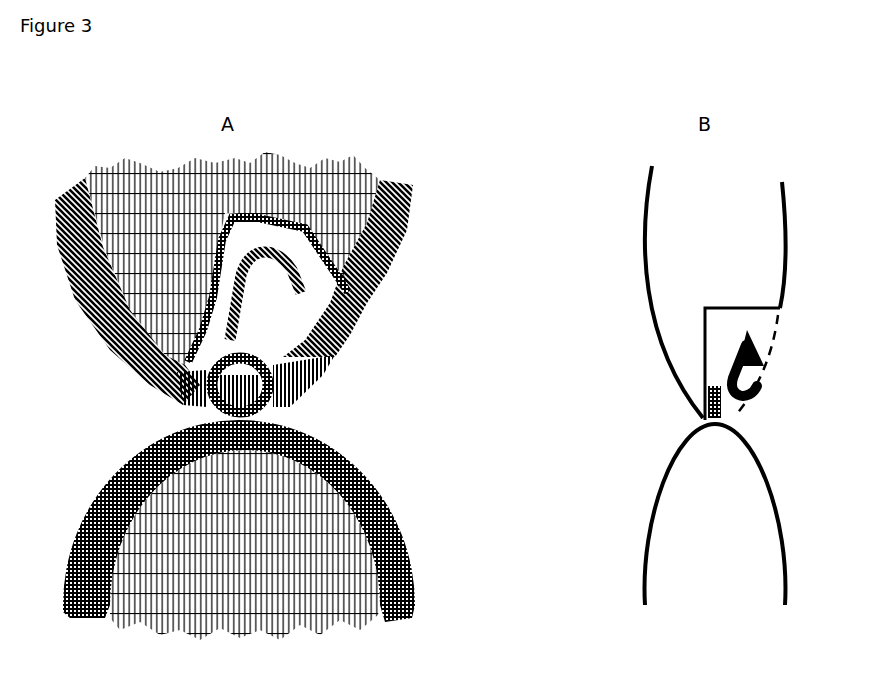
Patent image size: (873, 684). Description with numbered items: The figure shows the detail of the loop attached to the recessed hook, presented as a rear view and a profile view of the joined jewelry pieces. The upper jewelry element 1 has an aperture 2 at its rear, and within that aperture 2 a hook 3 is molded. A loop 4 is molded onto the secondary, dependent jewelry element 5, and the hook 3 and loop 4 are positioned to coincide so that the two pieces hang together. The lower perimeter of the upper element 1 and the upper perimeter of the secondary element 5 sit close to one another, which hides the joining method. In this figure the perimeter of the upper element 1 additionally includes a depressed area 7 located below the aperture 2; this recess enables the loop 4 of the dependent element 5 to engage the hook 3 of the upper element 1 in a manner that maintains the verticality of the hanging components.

The jewelry element 1 is at (407, 233).
The aperture 2 is at (330, 303).
The hook 3 is at (253, 310).
The loop 4 is at (273, 407).
The secondary jewelry element 5 is at (353, 467).
The depressed area 7 is at (195, 403).